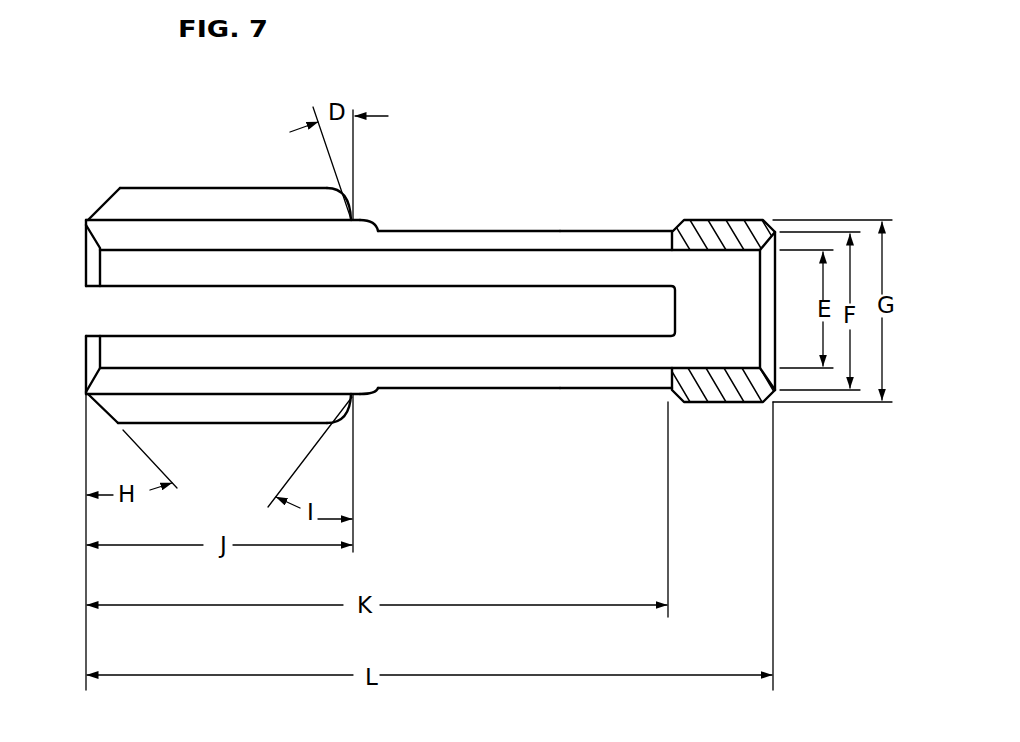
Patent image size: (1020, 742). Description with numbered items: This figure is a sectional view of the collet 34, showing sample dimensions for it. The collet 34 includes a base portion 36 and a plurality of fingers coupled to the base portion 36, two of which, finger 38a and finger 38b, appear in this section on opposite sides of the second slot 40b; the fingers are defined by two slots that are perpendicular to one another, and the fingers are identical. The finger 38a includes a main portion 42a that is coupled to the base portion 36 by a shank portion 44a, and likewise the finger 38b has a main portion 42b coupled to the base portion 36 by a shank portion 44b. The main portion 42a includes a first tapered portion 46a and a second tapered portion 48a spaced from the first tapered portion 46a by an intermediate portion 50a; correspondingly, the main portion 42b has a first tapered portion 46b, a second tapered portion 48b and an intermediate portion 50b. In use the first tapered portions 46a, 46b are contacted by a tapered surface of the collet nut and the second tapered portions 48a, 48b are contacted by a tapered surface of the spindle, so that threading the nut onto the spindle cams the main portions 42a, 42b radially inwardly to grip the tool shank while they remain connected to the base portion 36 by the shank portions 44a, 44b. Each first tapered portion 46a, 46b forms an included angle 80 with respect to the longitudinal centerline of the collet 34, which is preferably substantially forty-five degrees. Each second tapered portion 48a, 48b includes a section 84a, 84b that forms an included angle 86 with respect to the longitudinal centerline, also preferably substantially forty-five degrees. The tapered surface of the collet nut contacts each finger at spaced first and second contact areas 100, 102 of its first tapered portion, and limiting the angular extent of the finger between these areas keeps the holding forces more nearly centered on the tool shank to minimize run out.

The collet 34 is at (650, 163).
The base portion 36 is at (730, 220).
The finger 38a is at (490, 220).
The finger 38b is at (417, 392).
The second slot 40b is at (127, 308).
The main portion 42a is at (205, 188).
The main portion 42b is at (160, 428).
The shank portion 44a is at (582, 230).
The shank portion 44b is at (530, 390).
The first tapered portion 46a is at (108, 204).
The first tapered portion 46b is at (105, 410).
The second tapered portion 48a is at (352, 205).
The second tapered portion 48b is at (350, 412).
The intermediate portion 50a is at (257, 188).
The intermediate portion 50b is at (225, 424).
The included angle 80 is at (146, 480).
The section 84a is at (346, 190).
The section 84b is at (354, 430).
The included angle 86 is at (310, 469).
The first contact area 100 is at (86, 273).
The second contact area 102 is at (92, 217).